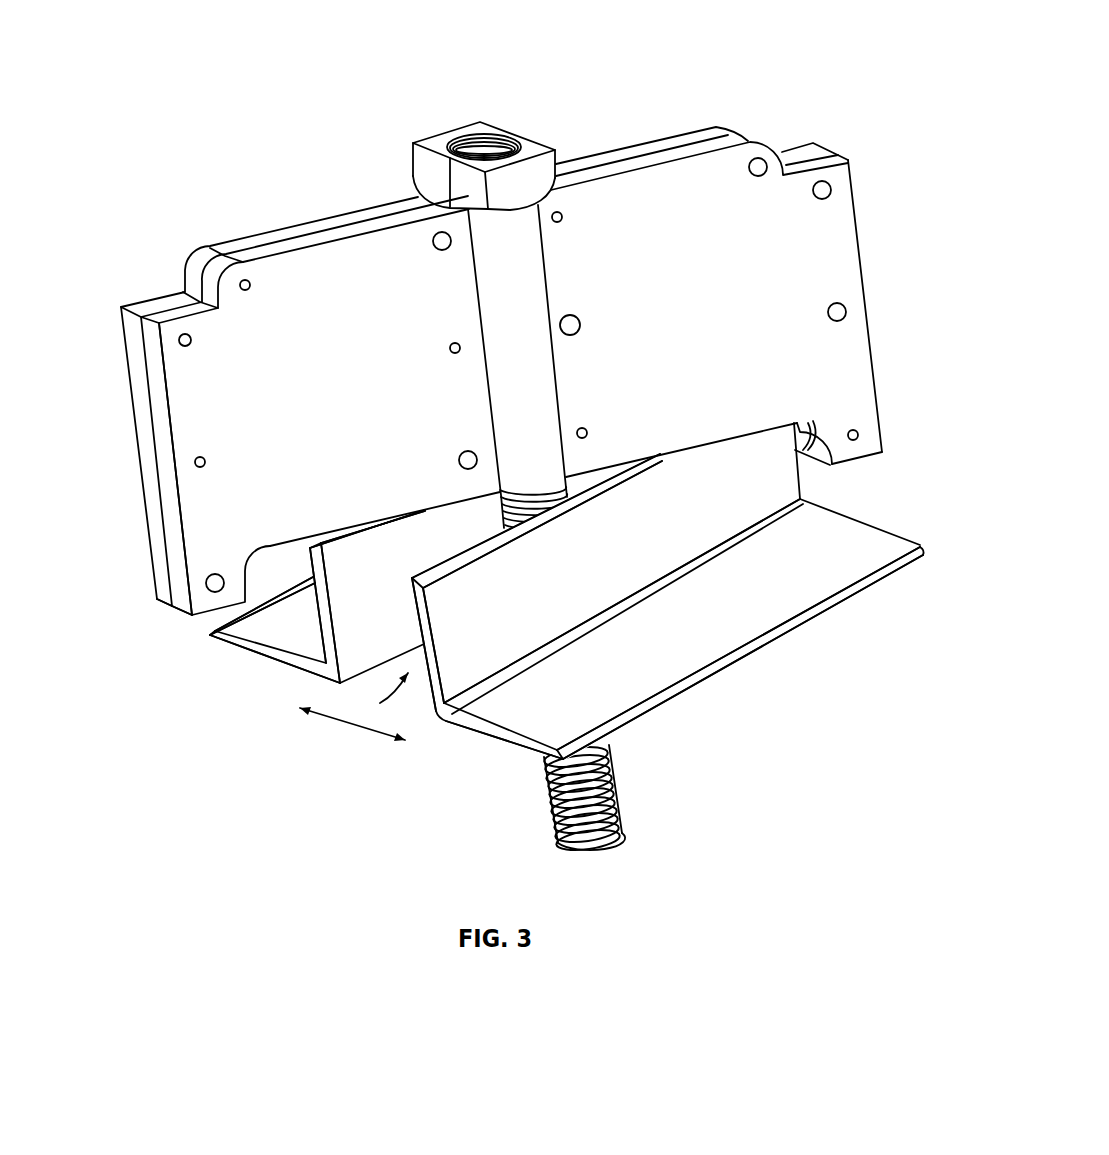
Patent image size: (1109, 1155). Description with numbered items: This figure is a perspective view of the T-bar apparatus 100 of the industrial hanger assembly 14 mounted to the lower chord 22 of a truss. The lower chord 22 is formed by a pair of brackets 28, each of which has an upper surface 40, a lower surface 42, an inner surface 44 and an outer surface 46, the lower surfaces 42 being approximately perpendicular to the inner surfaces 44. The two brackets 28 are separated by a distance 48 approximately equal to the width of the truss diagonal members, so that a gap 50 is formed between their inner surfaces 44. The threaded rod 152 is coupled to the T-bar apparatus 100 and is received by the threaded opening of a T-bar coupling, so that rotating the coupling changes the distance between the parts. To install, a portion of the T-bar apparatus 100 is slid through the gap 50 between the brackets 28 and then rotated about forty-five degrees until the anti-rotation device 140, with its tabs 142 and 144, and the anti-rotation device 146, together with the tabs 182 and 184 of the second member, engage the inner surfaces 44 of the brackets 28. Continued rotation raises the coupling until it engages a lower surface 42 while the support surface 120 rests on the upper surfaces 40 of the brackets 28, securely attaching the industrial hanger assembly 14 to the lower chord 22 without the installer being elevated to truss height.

The industrial hanger assembly 14 is at (778, 80).
The T-bar apparatus 100 is at (850, 166).
The anti-rotation device 140 is at (178, 553).
The tab 142 is at (175, 603).
The tab 182 is at (163, 578).
The tab 144 is at (866, 408).
The anti-rotation device 146 is at (870, 443).
The tab 184 is at (806, 452).
The support surface 120 is at (712, 443).
The lower chord 22 is at (858, 507).
The bracket 28 is at (380, 790).
The upper surface 40 is at (333, 537).
The inner surface 44 is at (317, 612).
The lower surface 42 is at (280, 665).
The outer surface 46 is at (212, 630).
The gap 50 is at (379, 695).
The distance 48 is at (343, 722).
The threaded rod 152 is at (615, 783).